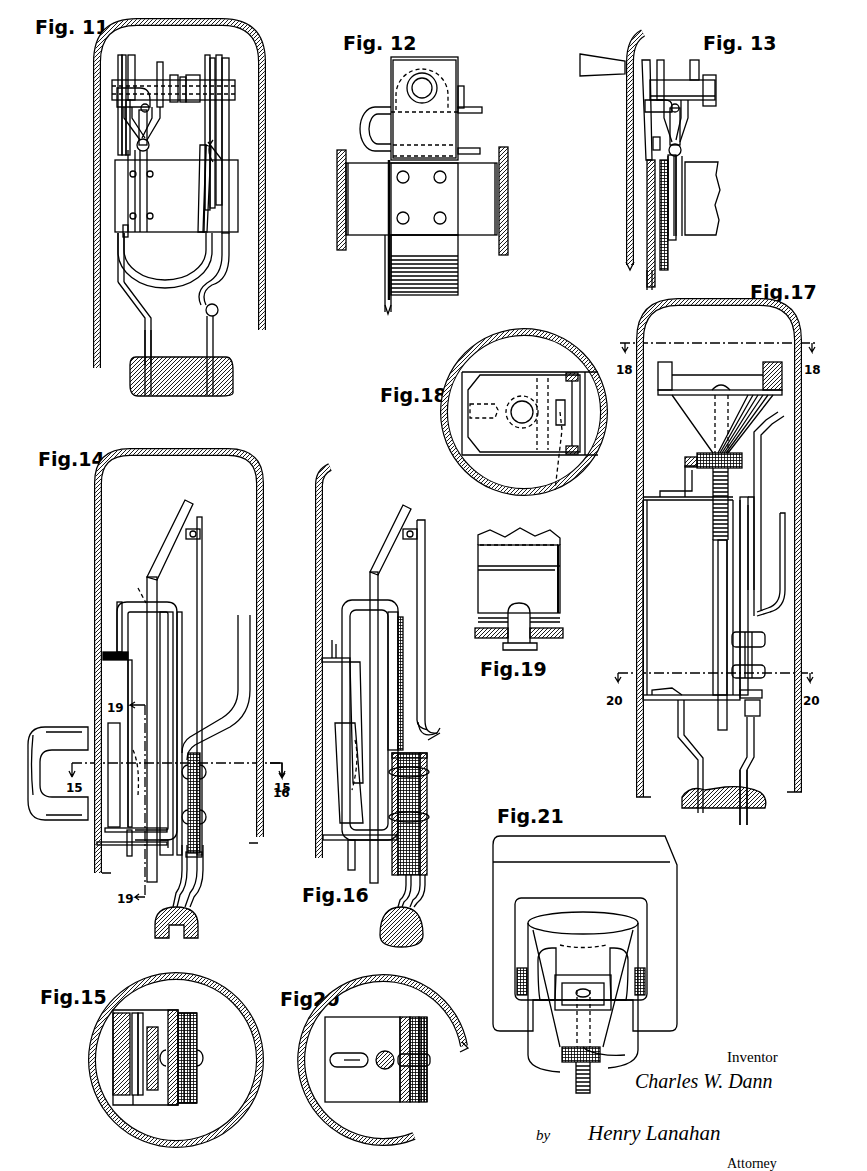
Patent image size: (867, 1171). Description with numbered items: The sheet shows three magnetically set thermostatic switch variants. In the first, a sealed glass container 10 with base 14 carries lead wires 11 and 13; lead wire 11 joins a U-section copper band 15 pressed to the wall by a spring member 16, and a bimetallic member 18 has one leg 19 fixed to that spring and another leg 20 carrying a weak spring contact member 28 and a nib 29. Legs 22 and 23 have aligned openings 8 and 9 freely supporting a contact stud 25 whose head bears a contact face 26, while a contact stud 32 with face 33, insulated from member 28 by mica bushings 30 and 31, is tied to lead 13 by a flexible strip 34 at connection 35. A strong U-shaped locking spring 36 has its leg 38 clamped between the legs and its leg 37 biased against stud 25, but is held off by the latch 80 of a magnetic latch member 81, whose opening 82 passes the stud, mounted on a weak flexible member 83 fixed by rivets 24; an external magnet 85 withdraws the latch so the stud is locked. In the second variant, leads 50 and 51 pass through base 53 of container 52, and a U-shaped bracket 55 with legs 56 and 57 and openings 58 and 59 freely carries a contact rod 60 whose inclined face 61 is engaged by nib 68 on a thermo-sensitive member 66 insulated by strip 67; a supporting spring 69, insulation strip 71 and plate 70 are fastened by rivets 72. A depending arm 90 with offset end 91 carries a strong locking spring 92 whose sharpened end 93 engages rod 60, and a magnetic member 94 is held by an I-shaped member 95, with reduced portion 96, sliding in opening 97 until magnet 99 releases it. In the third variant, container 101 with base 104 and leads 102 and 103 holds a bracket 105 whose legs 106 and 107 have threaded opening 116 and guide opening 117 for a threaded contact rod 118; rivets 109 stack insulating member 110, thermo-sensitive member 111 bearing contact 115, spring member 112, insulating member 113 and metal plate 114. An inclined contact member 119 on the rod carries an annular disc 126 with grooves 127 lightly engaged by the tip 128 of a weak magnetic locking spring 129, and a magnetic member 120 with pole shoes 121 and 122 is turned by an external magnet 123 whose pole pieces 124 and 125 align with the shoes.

In FIG. 11, the opening 8 is at (159, 75).
In FIG. 11, the opening 9 is at (132, 70).
In FIG. 11, the hermetically sealed container 10 is at (179, 195).
In FIG. 12, the hermetically sealed container 10 is at (338, 197).
In FIG. 13, the hermetically sealed container 10 is at (629, 157).
In FIG. 11, the lead wire 11 is at (144, 332).
In FIG. 12, the lead wire 11 is at (385, 303).
In FIG. 13, the lead wire 11 is at (647, 275).
In FIG. 11, the lead wire 13 is at (214, 345).
In FIG. 11, the base 14 is at (233, 375).
In FIG. 11, the band 15 is at (120, 238).
In FIG. 12, the band 15 is at (368, 238).
In FIG. 13, the band 15 is at (650, 248).
In FIG. 11, the spring member 16 is at (124, 252).
In FIG. 13, the spring member 16 is at (668, 250).
In FIG. 11, the thermo-sensitive member 18 is at (135, 300).
In FIG. 12, the thermo-sensitive member 18 is at (458, 270).
In FIG. 13, the thermo-sensitive member 18 is at (676, 264).
In FIG. 11, the leg 19 is at (123, 230).
In FIG. 11, the leg 20 is at (201, 190).
In FIG. 11, the leg 22 is at (126, 118).
In FIG. 12, the leg 22 is at (450, 76).
In FIG. 13, the leg 22 is at (660, 60).
In FIG. 11, the leg 23 is at (148, 110).
In FIG. 13, the leg 23 is at (682, 118).
In FIG. 11, the rivets 24 is at (130, 216).
In FIG. 12, the rivets 24 is at (438, 215).
In FIG. 13, the rivets 24 is at (690, 200).
In FIG. 11, the contact stud 25 is at (112, 85).
In FIG. 12, the contact stud 25 is at (416, 88).
In FIG. 13, the contact stud 25 is at (672, 82).
In FIG. 11, the contact face 26 is at (174, 75).
In FIG. 13, the contact face 26 is at (716, 80).
In FIG. 11, the contact carrying member 28 is at (205, 180).
In FIG. 11, the nib 29 is at (226, 146).
In FIG. 11, the mica bushing 30 is at (222, 58).
In FIG. 11, the mica bushing 31 is at (212, 58).
In FIG. 11, the contact stud 32 is at (193, 75).
In FIG. 11, the contact face 33 is at (183, 77).
In FIG. 11, the flexible conducting strip 34 is at (230, 255).
In FIG. 11, the connection 35 is at (218, 310).
In FIG. 12, the spring locking member 36 is at (365, 118).
In FIG. 11, the leg 37 is at (149, 110).
In FIG. 12, the leg 37 is at (478, 108).
In FIG. 13, the leg 37 is at (680, 108).
In FIG. 11, the leg 38 is at (149, 145).
In FIG. 12, the leg 38 is at (475, 149).
In FIG. 13, the leg 38 is at (681, 148).
In FIG. 14, the lead wire 50 is at (176, 900).
In FIG. 16, the lead wire 50 is at (406, 881).
In FIG. 14, the lead wire 51 is at (200, 884).
In FIG. 16, the lead wire 51 is at (425, 883).
In FIG. 14, the hermetically sealed container 52 is at (264, 559).
In FIG. 16, the hermetically sealed container 52 is at (315, 559).
In FIG. 15, the hermetically sealed container 52 is at (98, 1092).
In FIG. 14, the base 53 is at (176, 922).
In FIG. 16, the base 53 is at (422, 915).
In FIG. 14, the supporting bracket 55 is at (173, 656).
In FIG. 16, the supporting bracket 55 is at (395, 652).
In FIG. 14, the leg 56 is at (118, 606).
In FIG. 16, the leg 56 is at (380, 603).
In FIG. 19, the leg 57 is at (563, 634).
In FIG. 14, the leg 57 is at (128, 858).
In FIG. 15, the leg 57 is at (133, 1100).
In FIG. 14, the opening 58 is at (134, 589).
In FIG. 14, the opening 59 is at (167, 854).
In FIG. 14, the contact member 60 is at (147, 690).
In FIG. 16, the contact member 60 is at (370, 586).
In FIG. 15, the contact member 60 is at (152, 1090).
In FIG. 14, the contact face 61 is at (180, 548).
In FIG. 16, the contact face 61 is at (398, 520).
In FIG. 14, the thermo-sensitive member 66 is at (202, 580).
In FIG. 16, the thermo-sensitive member 66 is at (425, 615).
In FIG. 15, the thermo-sensitive member 66 is at (182, 1015).
In FIG. 14, the insulation strip 67 is at (182, 628).
In FIG. 16, the insulation strip 67 is at (403, 617).
In FIG. 15, the insulation strip 67 is at (176, 1015).
In FIG. 14, the contact nib 68 is at (195, 529).
In FIG. 16, the contact nib 68 is at (412, 529).
In FIG. 14, the supporting spring member 69 is at (240, 673).
In FIG. 16, the supporting spring member 69 is at (432, 733).
In FIG. 15, the supporting spring member 69 is at (186, 1016).
In FIG. 14, the conductive plate 70 is at (200, 790).
In FIG. 16, the conductive plate 70 is at (427, 788).
In FIG. 15, the conductive plate 70 is at (196, 1020).
In FIG. 14, the insulation strip 71 is at (202, 845).
In FIG. 16, the insulation strip 71 is at (427, 756).
In FIG. 15, the insulation strip 71 is at (190, 1018).
In FIG. 14, the rivets 72 is at (206, 817).
In FIG. 16, the rivets 72 is at (430, 771).
In FIG. 15, the rivets 72 is at (203, 1058).
In FIG. 11, the latch 80 is at (120, 98).
In FIG. 12, the latch 80 is at (466, 96).
In FIG. 13, the latch 80 is at (645, 106).
In FIG. 11, the latch member 81 is at (118, 58).
In FIG. 12, the latch member 81 is at (393, 70).
In FIG. 13, the latch member 81 is at (647, 125).
In FIG. 11, the opening 82 is at (122, 70).
In FIG. 12, the opening 82 is at (430, 80).
In FIG. 11, the flexible member 83 is at (128, 148).
In FIG. 12, the flexible member 83 is at (450, 199).
In FIG. 13, the flexible member 83 is at (653, 143).
In FIG. 13, the magnet 85 is at (600, 62).
In FIG. 14, the depending arm 90 is at (117, 628).
In FIG. 14, the offset end portion 91 is at (103, 656).
In FIG. 16, the offset end portion 91 is at (330, 655).
In FIG. 19, the spring locking member 92 is at (545, 552).
In FIG. 14, the spring locking member 92 is at (128, 675).
In FIG. 16, the spring locking member 92 is at (352, 672).
In FIG. 15, the spring locking member 92 is at (138, 1018).
In FIG. 19, the sharpened end 93 is at (560, 568).
In FIG. 14, the sharpened end 93 is at (137, 776).
In FIG. 16, the sharpened end 93 is at (352, 790).
In FIG. 15, the sharpened end 93 is at (137, 1020).
In FIG. 19, the magnetic member 94 is at (560, 592).
In FIG. 14, the magnetic member 94 is at (108, 725).
In FIG. 16, the magnetic member 94 is at (335, 725).
In FIG. 15, the magnetic member 94 is at (115, 1055).
In FIG. 19, the I-shaped member 95 is at (537, 647).
In FIG. 14, the I-shaped member 95 is at (100, 845).
In FIG. 16, the I-shaped member 95 is at (323, 837).
In FIG. 19, the reduced portion 96 is at (478, 620).
In FIG. 19, the opening 97 is at (532, 620).
In FIG. 14, the opening 97 is at (105, 830).
In FIG. 14, the magnet 99 is at (68, 735).
In FIG. 18, the hermetically sealed container 101 is at (462, 365).
In FIG. 17, the hermetically sealed container 101 is at (636, 736).
In FIG. 20, the hermetically sealed container 101 is at (332, 1120).
In FIG. 21, the hermetically sealed container 101 is at (532, 1068).
In FIG. 17, the lead wire 102 is at (698, 813).
In FIG. 20, the lead wire 102 is at (348, 1053).
In FIG. 17, the lead wire 103 is at (748, 818).
In FIG. 17, the base 104 is at (720, 790).
In FIG. 18, the bracket 105 is at (536, 448).
In FIG. 17, the bracket 105 is at (722, 568).
In FIG. 20, the bracket 105 is at (404, 1016).
In FIG. 18, the leg 106 is at (462, 425).
In FIG. 17, the leg 106 is at (664, 505).
In FIG. 17, the leg 107 is at (660, 700).
In FIG. 20, the leg 107 is at (362, 1013).
In FIG. 17, the rivets 109 is at (763, 670).
In FIG. 20, the rivets 109 is at (430, 1062).
In FIG. 17, the insulating member 110 is at (748, 505).
In FIG. 20, the insulating member 110 is at (413, 1016).
In FIG. 17, the thermo-sensitive member 111 is at (757, 515).
In FIG. 20, the thermo-sensitive member 111 is at (421, 1016).
In FIG. 18, the spring member 112 is at (588, 440).
In FIG. 17, the spring member 112 is at (782, 598).
In FIG. 20, the spring member 112 is at (423, 1016).
In FIG. 17, the insulating member 113 is at (760, 710).
In FIG. 20, the insulating member 113 is at (425, 1016).
In FIG. 17, the metal plate 114 is at (762, 695).
In FIG. 20, the metal plate 114 is at (428, 1017).
In FIG. 18, the contact 115 is at (574, 455).
In FIG. 17, the contact 115 is at (771, 496).
In FIG. 17, the opening 116 is at (716, 505).
In FIG. 17, the opening 117 is at (705, 701).
In FIG. 18, the contact rod 118 is at (524, 402).
In FIG. 17, the contact rod 118 is at (728, 486).
In FIG. 20, the contact rod 118 is at (384, 1051).
In FIG. 21, the contact rod 118 is at (575, 1085).
In FIG. 17, the contact member 119 is at (692, 415).
In FIG. 21, the contact member 119 is at (568, 1030).
In FIG. 17, the magnetic member 120 is at (695, 390).
In FIG. 21, the magnetic member 120 is at (560, 1010).
In FIG. 18, the pole shoe 121 is at (470, 380).
In FIG. 17, the pole shoe 121 is at (664, 367).
In FIG. 21, the pole shoe 121 is at (545, 945).
In FIG. 18, the pole shoe 122 is at (578, 378).
In FIG. 17, the pole shoe 122 is at (772, 367).
In FIG. 21, the pole shoe 122 is at (618, 945).
In FIG. 21, the magnet 123 is at (665, 920).
In FIG. 21, the pole piece 124 is at (648, 997).
In FIG. 21, the pole piece 125 is at (512, 996).
In FIG. 17, the annular disc 126 is at (713, 480).
In FIG. 17, the grooves 127 is at (697, 458).
In FIG. 17, the sharpened tip 128 is at (685, 462).
In FIG. 17, the spring locking member 129 is at (685, 482).